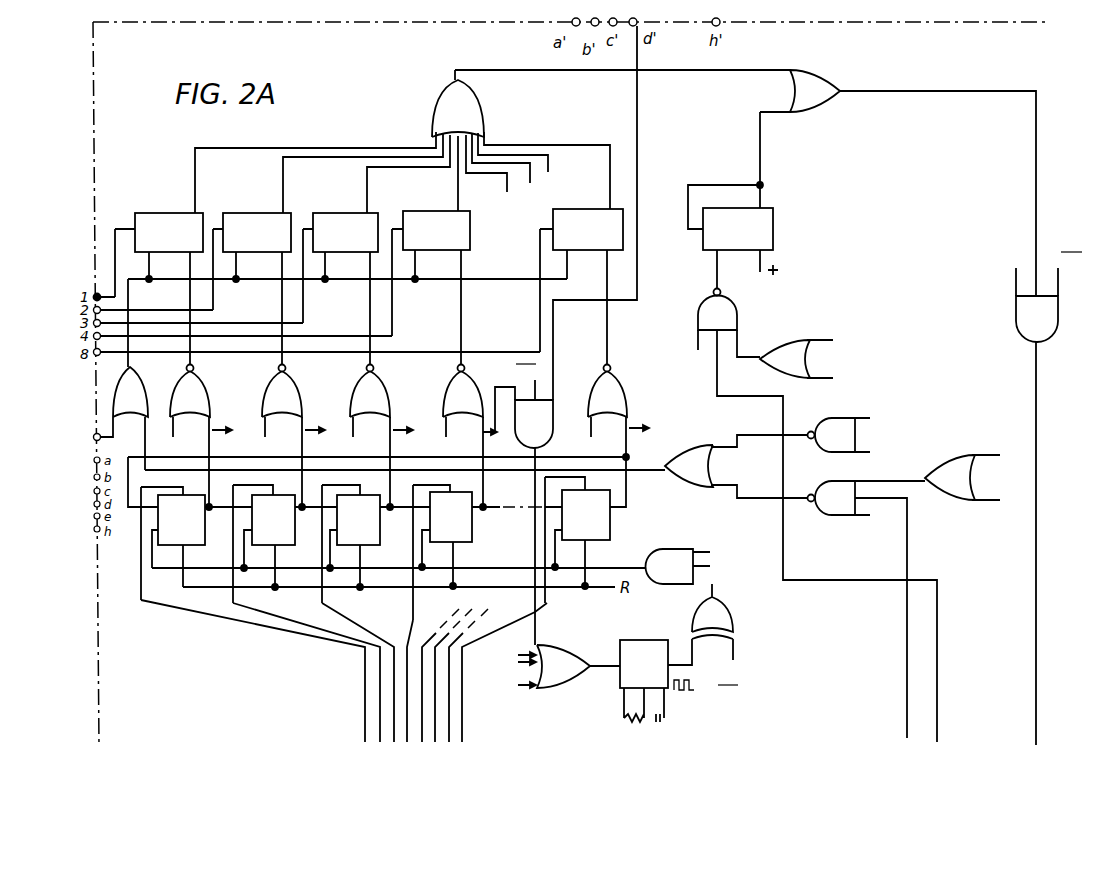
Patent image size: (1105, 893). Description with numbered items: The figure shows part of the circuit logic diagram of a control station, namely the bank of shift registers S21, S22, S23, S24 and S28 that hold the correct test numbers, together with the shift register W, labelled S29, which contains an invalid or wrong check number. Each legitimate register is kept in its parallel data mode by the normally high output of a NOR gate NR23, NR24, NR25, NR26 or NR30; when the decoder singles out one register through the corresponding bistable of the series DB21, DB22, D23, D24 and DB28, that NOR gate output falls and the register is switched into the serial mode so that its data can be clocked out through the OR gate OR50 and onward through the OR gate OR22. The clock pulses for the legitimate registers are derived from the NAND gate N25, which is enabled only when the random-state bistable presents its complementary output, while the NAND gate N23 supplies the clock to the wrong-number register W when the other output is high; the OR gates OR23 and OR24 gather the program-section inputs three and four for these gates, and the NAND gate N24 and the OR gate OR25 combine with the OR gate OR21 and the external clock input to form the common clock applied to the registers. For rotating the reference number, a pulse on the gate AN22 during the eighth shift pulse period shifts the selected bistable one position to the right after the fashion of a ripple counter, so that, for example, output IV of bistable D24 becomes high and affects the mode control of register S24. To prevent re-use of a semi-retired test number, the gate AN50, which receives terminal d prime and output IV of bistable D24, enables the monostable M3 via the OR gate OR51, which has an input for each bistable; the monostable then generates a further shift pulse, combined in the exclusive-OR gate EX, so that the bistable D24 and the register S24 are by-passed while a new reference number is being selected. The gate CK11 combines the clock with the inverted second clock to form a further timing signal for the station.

The OR gate OR50 is at (402, 146).
The shift register S21 is at (158, 277).
The shift register S22 is at (252, 277).
The shift register S23 is at (340, 277).
The shift register S24 is at (431, 276).
The shift register S28 is at (581, 275).
The shift register W S29 is at (741, 239).
The OR gate OR21 is at (105, 418).
The OR gate OR22 is at (898, 183).
The OR gate OR23 is at (804, 359).
The OR gate OR24 is at (970, 478).
The OR gate OR25 is at (739, 466).
The OR gate OR51 is at (569, 666).
The NOR gate NR23 is at (201, 438).
The NOR gate NR24 is at (293, 438).
The NOR gate NR25 is at (381, 438).
The NOR gate NR26 is at (479, 438).
The NOR gate NR30 is at (618, 436).
The AND gate AN50 is at (534, 504).
The AND gate AN22 is at (696, 557).
The NAND gate N23 is at (809, 519).
The NAND gate N24 is at (854, 435).
The NAND gate N25 is at (867, 609).
The bistable DB21 is at (196, 543).
The bistable DB22 is at (285, 544).
The bistable D23 is at (376, 544).
The bistable D24 is at (487, 552).
The bistable DB28 is at (590, 540).
The monostable M3 is at (657, 681).
The exclusive-OR gate EX is at (718, 642).
The clock gate CK11 is at (1033, 497).